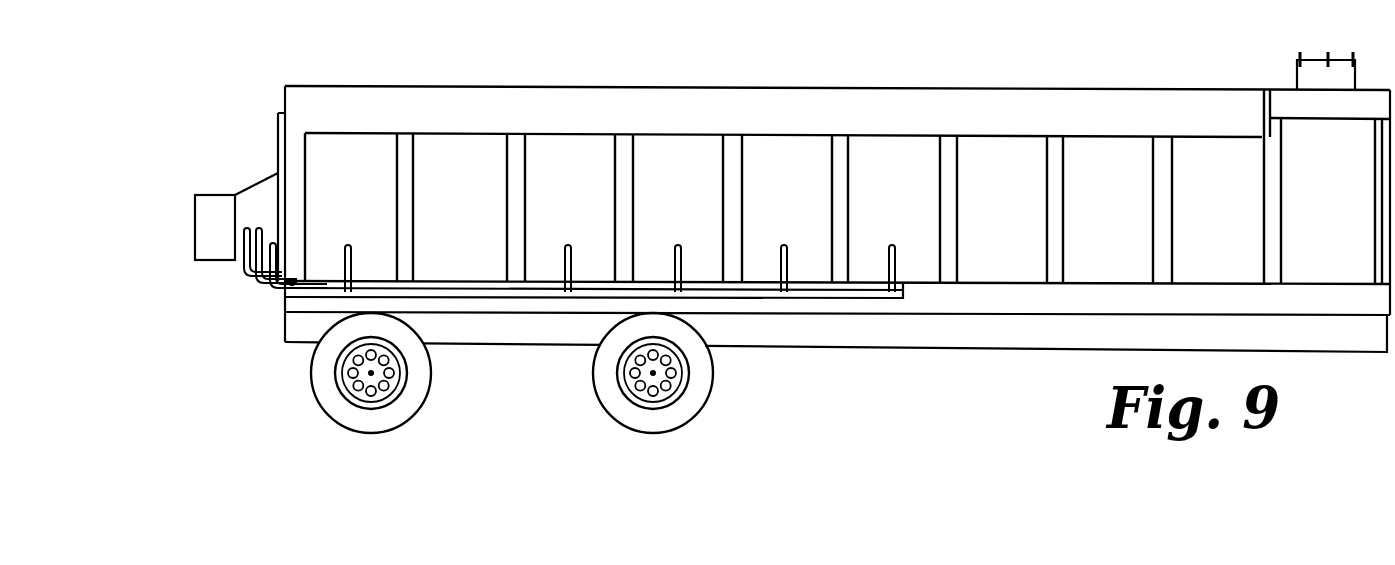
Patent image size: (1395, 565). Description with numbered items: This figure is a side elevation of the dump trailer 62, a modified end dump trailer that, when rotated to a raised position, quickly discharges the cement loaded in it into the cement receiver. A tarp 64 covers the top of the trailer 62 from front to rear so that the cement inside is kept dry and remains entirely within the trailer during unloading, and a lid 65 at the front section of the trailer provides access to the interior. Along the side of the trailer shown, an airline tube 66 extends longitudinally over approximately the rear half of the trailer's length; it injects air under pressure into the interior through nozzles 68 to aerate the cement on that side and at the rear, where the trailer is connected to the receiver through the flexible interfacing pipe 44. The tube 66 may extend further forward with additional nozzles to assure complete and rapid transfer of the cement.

The flexible interfacing pipe 44 is at (213, 195).
The dump trailer 62 is at (588, 83).
The tarp 64 is at (937, 89).
The lid 65 is at (1297, 82).
The airline tube 66 is at (846, 291).
The nozzles 68 is at (347, 262).